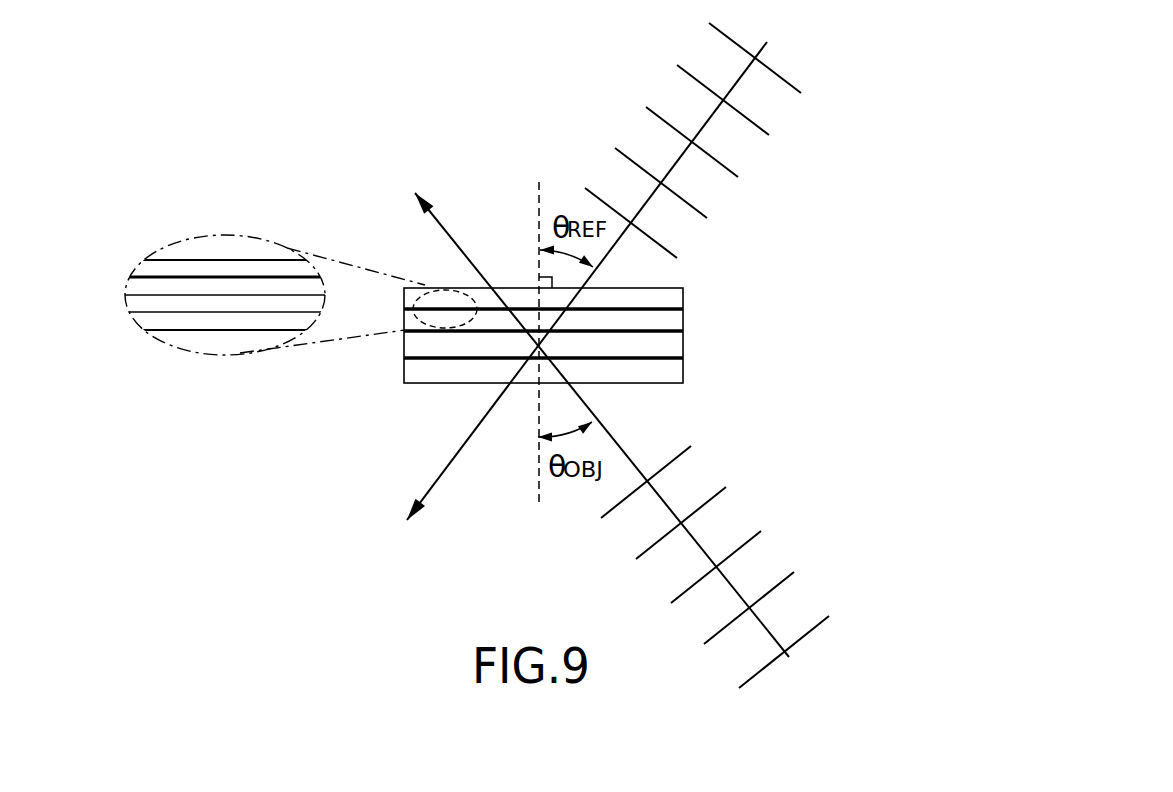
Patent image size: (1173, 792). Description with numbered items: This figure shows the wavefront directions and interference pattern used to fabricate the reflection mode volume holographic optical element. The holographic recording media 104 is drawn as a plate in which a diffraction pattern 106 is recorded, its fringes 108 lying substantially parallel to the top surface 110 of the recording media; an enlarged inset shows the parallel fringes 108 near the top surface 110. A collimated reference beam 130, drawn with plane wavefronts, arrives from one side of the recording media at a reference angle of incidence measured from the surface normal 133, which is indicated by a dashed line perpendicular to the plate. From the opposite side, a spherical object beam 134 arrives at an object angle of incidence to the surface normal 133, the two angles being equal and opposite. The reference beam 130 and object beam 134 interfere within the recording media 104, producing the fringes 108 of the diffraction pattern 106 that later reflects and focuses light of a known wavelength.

The recording media 104 is at (355, 223).
The diffraction pattern 106 is at (452, 290).
The fringes 108 is at (150, 277).
The top surface 110 is at (443, 290).
The collimated reference beam 130 is at (823, 51).
The surface normal 133 is at (538, 200).
The spherical object beam 134 is at (828, 667).